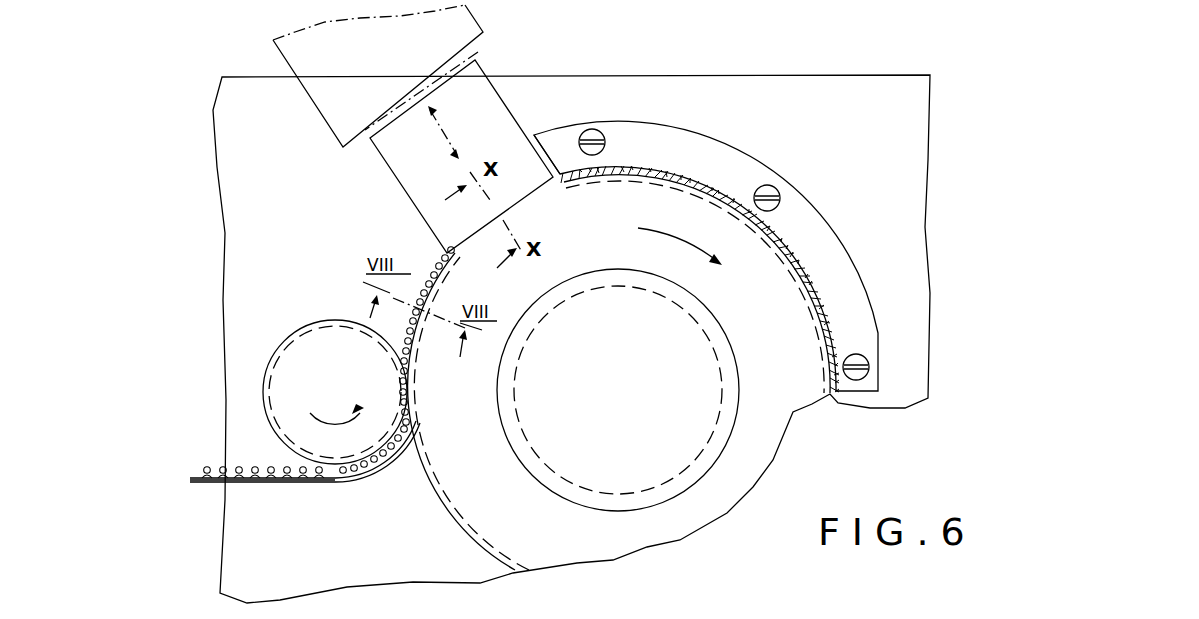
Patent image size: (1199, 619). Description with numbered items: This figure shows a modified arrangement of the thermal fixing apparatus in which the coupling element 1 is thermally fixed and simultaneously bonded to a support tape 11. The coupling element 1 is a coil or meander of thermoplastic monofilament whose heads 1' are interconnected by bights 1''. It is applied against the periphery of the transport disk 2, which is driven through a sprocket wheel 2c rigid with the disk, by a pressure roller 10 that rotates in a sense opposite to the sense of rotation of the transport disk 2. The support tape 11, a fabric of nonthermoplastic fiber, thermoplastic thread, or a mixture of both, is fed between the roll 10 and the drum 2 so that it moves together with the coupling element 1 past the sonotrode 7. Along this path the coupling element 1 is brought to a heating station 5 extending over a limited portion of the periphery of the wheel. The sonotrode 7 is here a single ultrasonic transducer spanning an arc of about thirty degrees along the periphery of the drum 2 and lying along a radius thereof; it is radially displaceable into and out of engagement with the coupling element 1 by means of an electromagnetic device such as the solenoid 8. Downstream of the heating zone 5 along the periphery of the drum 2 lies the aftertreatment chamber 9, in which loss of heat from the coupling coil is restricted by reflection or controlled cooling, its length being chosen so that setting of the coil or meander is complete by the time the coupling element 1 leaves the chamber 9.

The coupling element 1 is at (324, 353).
The heads 1' is at (304, 446).
The bights 1'' is at (262, 514).
The support tape 11 is at (268, 487).
The transport disk 2 is at (453, 490).
The sprocket wheel 2c is at (557, 463).
The heating station 5 is at (539, 118).
The sonotrode 7 is at (480, 100).
The solenoid 8 is at (320, 116).
The aftertreatment chamber 9 is at (852, 295).
The pressure roller 10 is at (291, 350).